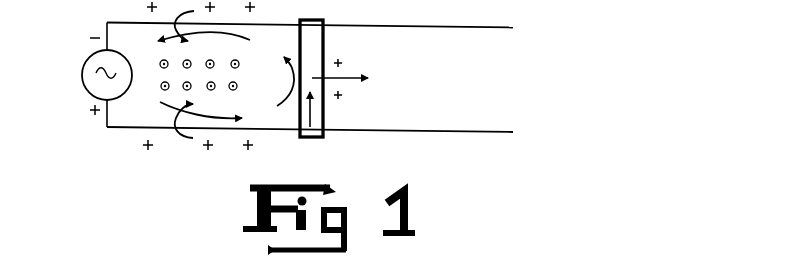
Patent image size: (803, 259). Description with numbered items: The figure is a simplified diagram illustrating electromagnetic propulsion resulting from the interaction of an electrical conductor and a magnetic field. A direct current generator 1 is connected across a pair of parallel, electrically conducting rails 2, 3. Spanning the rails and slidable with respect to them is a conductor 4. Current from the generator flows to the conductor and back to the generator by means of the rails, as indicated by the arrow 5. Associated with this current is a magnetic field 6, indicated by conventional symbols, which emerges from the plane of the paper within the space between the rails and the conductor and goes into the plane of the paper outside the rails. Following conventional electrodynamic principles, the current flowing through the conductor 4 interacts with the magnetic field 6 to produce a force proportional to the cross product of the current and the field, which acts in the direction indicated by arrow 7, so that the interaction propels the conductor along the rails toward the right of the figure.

The direct current generator 1 is at (85, 85).
The electrically conducting rail 2 is at (375, 25).
The electrically conducting rail 3 is at (398, 132).
The conductor 4 is at (323, 115).
The arrow 5 is at (165, 104).
The magnetic field 6 is at (238, 62).
The arrow 7 is at (348, 73).